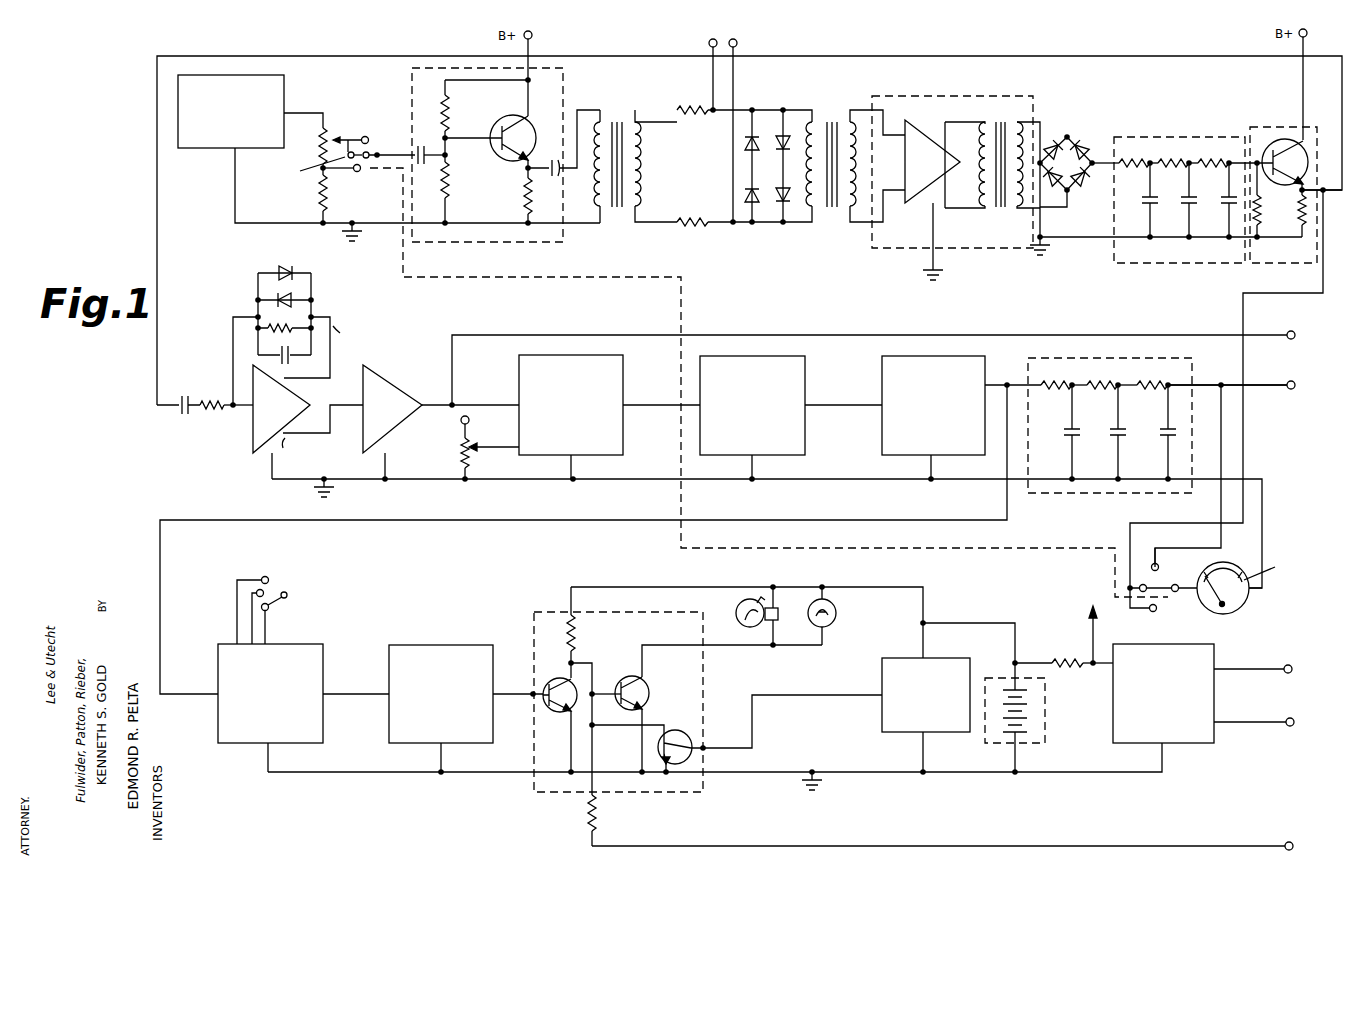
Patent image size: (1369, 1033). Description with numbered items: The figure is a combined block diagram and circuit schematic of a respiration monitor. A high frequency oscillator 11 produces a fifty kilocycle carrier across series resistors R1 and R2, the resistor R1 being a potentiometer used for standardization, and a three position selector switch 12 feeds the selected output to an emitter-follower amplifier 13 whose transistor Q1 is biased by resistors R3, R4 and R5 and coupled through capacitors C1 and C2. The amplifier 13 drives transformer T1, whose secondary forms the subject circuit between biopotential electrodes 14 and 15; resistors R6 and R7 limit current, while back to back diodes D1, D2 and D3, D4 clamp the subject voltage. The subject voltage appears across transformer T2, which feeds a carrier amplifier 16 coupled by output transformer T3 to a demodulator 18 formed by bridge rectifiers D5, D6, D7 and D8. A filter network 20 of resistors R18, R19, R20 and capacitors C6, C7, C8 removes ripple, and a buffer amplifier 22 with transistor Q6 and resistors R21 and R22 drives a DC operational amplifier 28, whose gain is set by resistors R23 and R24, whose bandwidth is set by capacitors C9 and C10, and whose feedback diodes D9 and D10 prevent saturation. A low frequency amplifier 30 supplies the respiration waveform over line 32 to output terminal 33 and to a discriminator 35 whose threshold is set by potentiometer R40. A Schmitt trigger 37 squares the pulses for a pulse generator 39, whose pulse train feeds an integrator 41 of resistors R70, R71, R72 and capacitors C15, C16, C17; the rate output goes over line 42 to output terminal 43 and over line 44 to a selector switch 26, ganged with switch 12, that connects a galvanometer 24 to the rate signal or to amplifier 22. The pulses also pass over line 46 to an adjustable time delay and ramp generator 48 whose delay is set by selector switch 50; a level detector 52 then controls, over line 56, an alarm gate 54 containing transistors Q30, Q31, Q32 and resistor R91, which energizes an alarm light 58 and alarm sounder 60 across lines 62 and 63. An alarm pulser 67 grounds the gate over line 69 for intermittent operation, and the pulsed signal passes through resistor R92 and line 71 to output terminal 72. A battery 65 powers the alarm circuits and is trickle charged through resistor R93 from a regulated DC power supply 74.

The high frequency oscillator 11 is at (284, 80).
The three position selector switch 12 is at (377, 154).
The amplifier 13 is at (425, 68).
The biopotential electrode 14 is at (709, 43).
The biopotential electrode 15 is at (737, 43).
The carrier amplifier 16 is at (912, 96).
The demodulator 18 is at (1091, 174).
The filter network 20 is at (1116, 265).
The buffer amplifier 22 is at (1262, 127).
The galvanometer 24 is at (1247, 604).
The three position selector switch 26 is at (1176, 592).
The DC operational amplifier 28 is at (304, 364).
The low frequency amplifier 30 is at (385, 388).
The line 32 is at (688, 335).
The output terminal 33 is at (1295, 335).
The discriminator 35 is at (623, 384).
The Schmitt trigger circuit 37 is at (806, 384).
The pulse generator 39 is at (882, 432).
The integrator 41 is at (1157, 438).
The line 42 is at (1226, 382).
The output terminal 43 is at (1296, 386).
The line 44 is at (1222, 439).
The line 46 is at (535, 520).
The adjustable time delay and ramp generator circuit 48 is at (323, 650).
The selector switch 50 is at (289, 597).
The level detector 52 is at (406, 645).
The alarm gate 54 is at (550, 612).
The line 56 is at (518, 684).
The alarm light 58 is at (836, 600).
The alarm sounder 60 is at (748, 599).
The line 62 is at (598, 587).
The line 63 is at (756, 645).
The rechargeable battery 65 is at (1045, 730).
The alarm pulser 67 is at (930, 736).
The line 69 is at (822, 695).
The line 71 is at (730, 846).
The output terminal 72 is at (1289, 842).
The regulated DC power supply 74 is at (1182, 745).
The variable potentiometer R1 is at (330, 122).
The fixed resistor R2 is at (318, 197).
The biasing resistor R3 is at (452, 97).
The biasing resistor R4 is at (452, 166).
The biasing resistor R5 is at (521, 181).
The current limiting resistor R6 is at (695, 114).
The current limiting resistor R7 is at (695, 227).
The filter resistor R18 is at (1140, 160).
The filter resistor R19 is at (1173, 158).
The filter resistor R20 is at (1208, 158).
The resistor R21 is at (1254, 228).
The resistor R22 is at (1300, 227).
The gain determining resistor R23 is at (222, 389).
The feedback resistor R24 is at (298, 325).
The potentiometer R40 is at (461, 447).
The integrator resistor R70 is at (1042, 384).
The integrator resistor R71 is at (1093, 384).
The integrator resistor R72 is at (1142, 384).
The resistor R91 is at (580, 641).
The current limiting resistor R92 is at (600, 803).
The resistor R93 is at (1062, 668).
The input capacitor C1 is at (420, 166).
The output capacitor C2 is at (559, 175).
The filter capacitor C6 is at (1146, 206).
The filter capacitor C7 is at (1186, 206).
The filter capacitor C8 is at (1226, 206).
The feedback capacitor C9 is at (290, 360).
The input capacitor C10 is at (176, 411).
The integrator capacitor C15 is at (1076, 440).
The integrator capacitor C16 is at (1122, 440).
The integrator capacitor C17 is at (1172, 440).
The limiting diode D1 is at (748, 146).
The limiting diode D2 is at (745, 193).
The limiting diode D3 is at (790, 133).
The limiting diode D4 is at (787, 206).
The rectifier D5 is at (1050, 144).
The rectifier D6 is at (1089, 149).
The rectifier D7 is at (1082, 184).
The rectifier D8 is at (1048, 180).
The feedback diode D9 is at (286, 271).
The feedback diode D10 is at (300, 298).
The transformer T1 is at (614, 112).
The transformer T2 is at (838, 116).
The output transformer T3 is at (1005, 118).
The transistor Q1 is at (519, 115).
The transistor Q6 is at (1290, 140).
The transistor Q30 is at (556, 712).
The transistor Q31 is at (648, 676).
The transistor Q32 is at (694, 743).